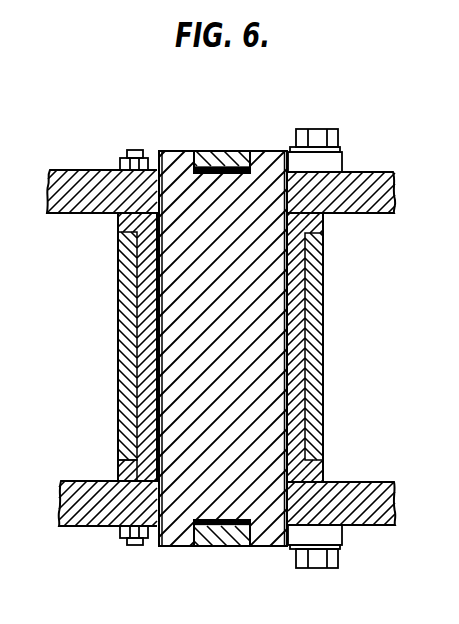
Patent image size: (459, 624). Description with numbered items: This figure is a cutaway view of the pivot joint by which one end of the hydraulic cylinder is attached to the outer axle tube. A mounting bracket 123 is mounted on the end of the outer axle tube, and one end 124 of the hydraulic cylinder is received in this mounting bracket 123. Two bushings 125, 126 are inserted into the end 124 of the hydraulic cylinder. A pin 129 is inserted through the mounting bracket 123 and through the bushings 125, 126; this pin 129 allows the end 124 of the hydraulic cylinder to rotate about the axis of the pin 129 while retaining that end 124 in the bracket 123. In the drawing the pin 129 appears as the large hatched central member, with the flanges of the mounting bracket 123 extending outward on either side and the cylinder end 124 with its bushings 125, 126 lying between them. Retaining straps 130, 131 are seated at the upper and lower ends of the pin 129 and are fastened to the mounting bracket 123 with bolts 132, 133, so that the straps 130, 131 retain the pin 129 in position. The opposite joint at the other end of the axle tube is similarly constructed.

The mounting bracket 123 is at (80, 170).
The end of hydraulic cylinder 124 is at (118, 428).
The bushing 125 is at (118, 232).
The bushing 126 is at (118, 477).
The pin 129 is at (268, 548).
The retaining strap 130 is at (214, 150).
The retaining strap 131 is at (208, 548).
The bolt 132 is at (315, 128).
The bolt 133 is at (322, 568).